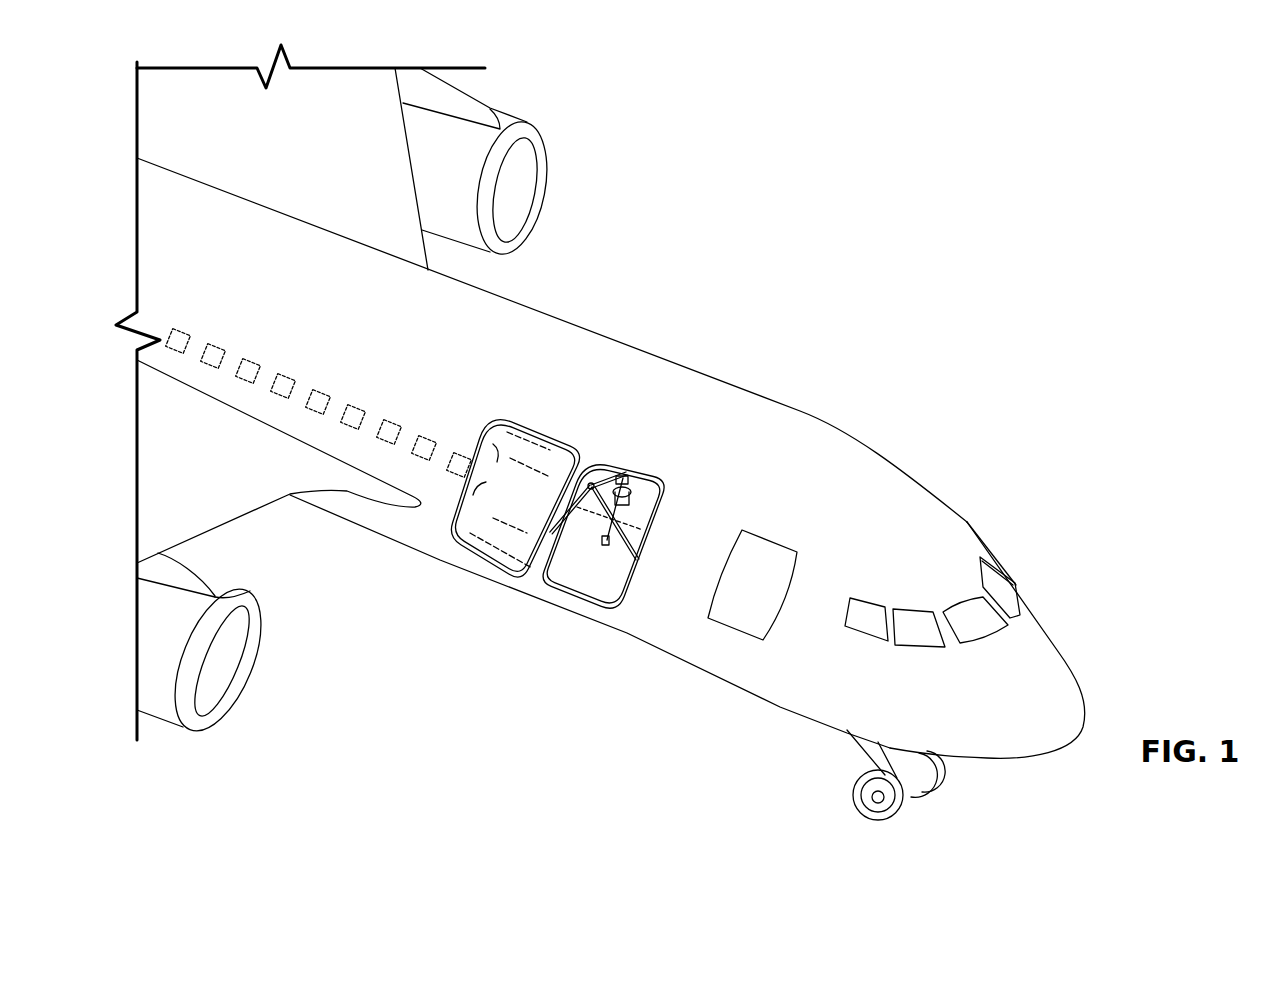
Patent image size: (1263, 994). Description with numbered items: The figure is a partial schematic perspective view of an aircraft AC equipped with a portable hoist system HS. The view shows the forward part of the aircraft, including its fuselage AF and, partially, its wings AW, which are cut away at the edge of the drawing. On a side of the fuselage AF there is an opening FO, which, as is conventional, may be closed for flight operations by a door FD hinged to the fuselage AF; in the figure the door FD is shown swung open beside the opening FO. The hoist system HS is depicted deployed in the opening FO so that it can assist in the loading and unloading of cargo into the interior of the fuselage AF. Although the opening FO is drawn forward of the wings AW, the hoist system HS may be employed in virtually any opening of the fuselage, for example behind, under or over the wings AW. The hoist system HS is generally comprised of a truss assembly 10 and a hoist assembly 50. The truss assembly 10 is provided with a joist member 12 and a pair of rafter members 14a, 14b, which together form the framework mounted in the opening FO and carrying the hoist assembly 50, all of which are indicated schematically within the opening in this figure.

The aircraft AC is at (600, 432).
The fuselage AF is at (395, 370).
The wings AW is at (293, 150).
The door FD is at (507, 506).
The opening FO is at (569, 573).
The truss assembly 10 is at (627, 473).
The joist member 12 is at (612, 482).
The rafter member 14a is at (623, 537).
The rafter member 14b is at (568, 518).
The hoist system HS is at (619, 470).
The hoist assembly 50 is at (641, 487).